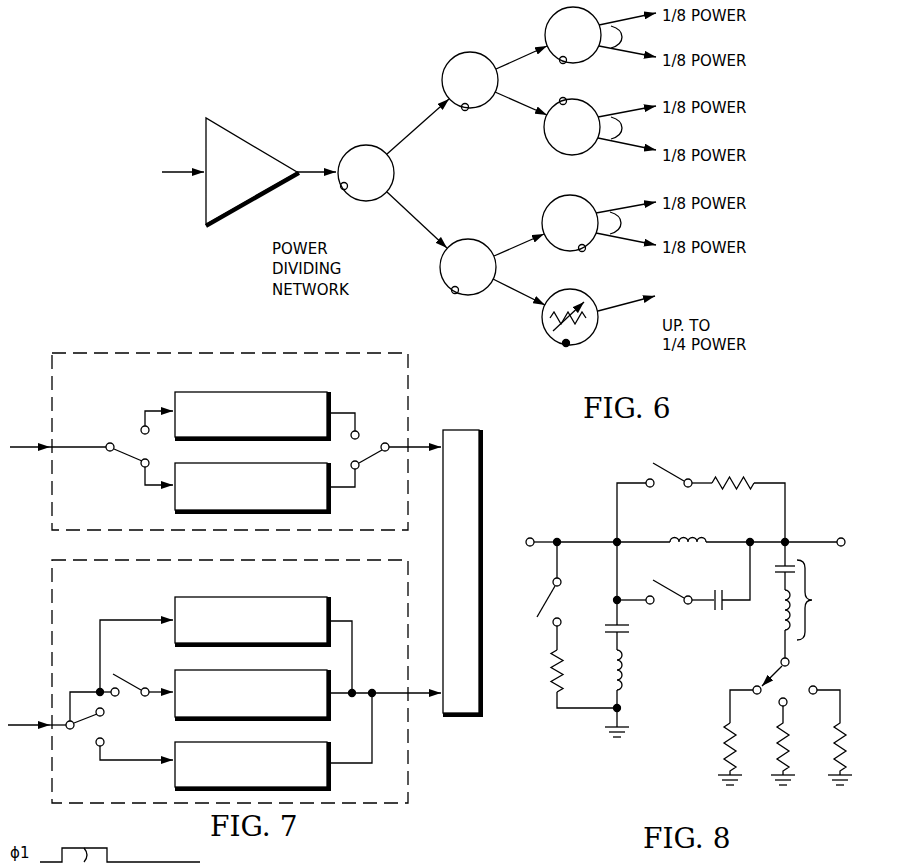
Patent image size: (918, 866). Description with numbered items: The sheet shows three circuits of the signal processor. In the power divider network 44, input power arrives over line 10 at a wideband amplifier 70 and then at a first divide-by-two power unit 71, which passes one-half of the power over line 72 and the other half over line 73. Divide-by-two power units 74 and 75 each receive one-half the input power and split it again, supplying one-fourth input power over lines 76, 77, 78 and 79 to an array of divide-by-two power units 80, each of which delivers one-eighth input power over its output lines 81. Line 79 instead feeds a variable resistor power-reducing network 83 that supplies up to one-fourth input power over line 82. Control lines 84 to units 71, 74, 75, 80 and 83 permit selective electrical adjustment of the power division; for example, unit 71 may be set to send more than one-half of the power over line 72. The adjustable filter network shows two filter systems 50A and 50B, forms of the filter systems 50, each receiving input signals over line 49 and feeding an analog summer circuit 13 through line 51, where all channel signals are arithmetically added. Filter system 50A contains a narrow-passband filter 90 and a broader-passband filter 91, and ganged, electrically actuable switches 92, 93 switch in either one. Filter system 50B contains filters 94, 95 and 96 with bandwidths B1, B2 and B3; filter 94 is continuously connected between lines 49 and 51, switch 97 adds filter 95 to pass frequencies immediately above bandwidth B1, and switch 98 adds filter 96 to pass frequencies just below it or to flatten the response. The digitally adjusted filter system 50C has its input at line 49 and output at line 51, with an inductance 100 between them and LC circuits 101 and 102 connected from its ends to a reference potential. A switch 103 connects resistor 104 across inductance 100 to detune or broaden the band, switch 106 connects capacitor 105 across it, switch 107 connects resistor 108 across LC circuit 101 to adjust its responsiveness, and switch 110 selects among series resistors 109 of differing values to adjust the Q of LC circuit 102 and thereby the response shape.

In FIG. 6, the input power line 10 is at (183, 171).
In FIG. 7, the analog summer circuit 13 is at (459, 716).
In FIG. 6, the power divider network 44 is at (481, 39).
In FIG. 7, the input line 49 is at (28, 446).
In FIG. 8, the input line 49 is at (533, 538).
In FIG. 7, the filter system 50 is at (52, 485).
In FIG. 7, the filter system 50A is at (414, 385).
In FIG. 7, the filter system 50B is at (409, 781).
In FIG. 8, the filter system 50C is at (777, 478).
In FIG. 7, the output line 51 is at (417, 698).
In FIG. 8, the output line 51 is at (844, 538).
In FIG. 6, the wideband amplifier 70 is at (260, 149).
In FIG. 6, the first divide-by-two power unit 71 is at (349, 152).
In FIG. 6, the output line 72 is at (405, 136).
In FIG. 6, the output line 73 is at (410, 216).
In FIG. 6, the divide-by-two power unit 74 is at (449, 62).
In FIG. 6, the divide-by-two power unit 75 is at (482, 243).
In FIG. 6, the output line 76 is at (506, 65).
In FIG. 6, the output line 77 is at (511, 104).
In FIG. 6, the output line 78 is at (522, 244).
In FIG. 6, the output line 79 is at (507, 287).
In FIG. 6, the divide-by-two power units 80 is at (556, 18).
In FIG. 6, the output lines 81 is at (622, 37).
In FIG. 6, the output line 82 is at (617, 307).
In FIG. 6, the variable resistor power-reducing network 83 is at (590, 337).
In FIG. 6, the control lines 84 is at (343, 190).
In FIG. 7, the filter 90 is at (313, 392).
In FIG. 7, the filter 91 is at (313, 511).
In FIG. 7, the switch 92 is at (124, 455).
In FIG. 7, the switch 93 is at (368, 443).
In FIG. 7, the filter 94 is at (280, 597).
In FIG. 7, the filter 95 is at (272, 670).
In FIG. 7, the filter 96 is at (272, 742).
In FIG. 7, the switch 97 is at (140, 685).
In FIG. 7, the switch 98 is at (98, 719).
In FIG. 8, the inductance 100 is at (683, 540).
In FIG. 8, the LC circuit 101 is at (624, 644).
In FIG. 8, the LC circuit 102 is at (811, 600).
In FIG. 8, the switch 103 is at (665, 466).
In FIG. 8, the resistor 104 is at (733, 477).
In FIG. 8, the capacitor 105 is at (717, 596).
In FIG. 8, the switch 106 is at (670, 584).
In FIG. 8, the switch 107 is at (553, 589).
In FIG. 8, the resistor 108 is at (565, 672).
In FIG. 8, the series resistors 109 is at (737, 741).
In FIG. 8, the switch 110 is at (767, 669).